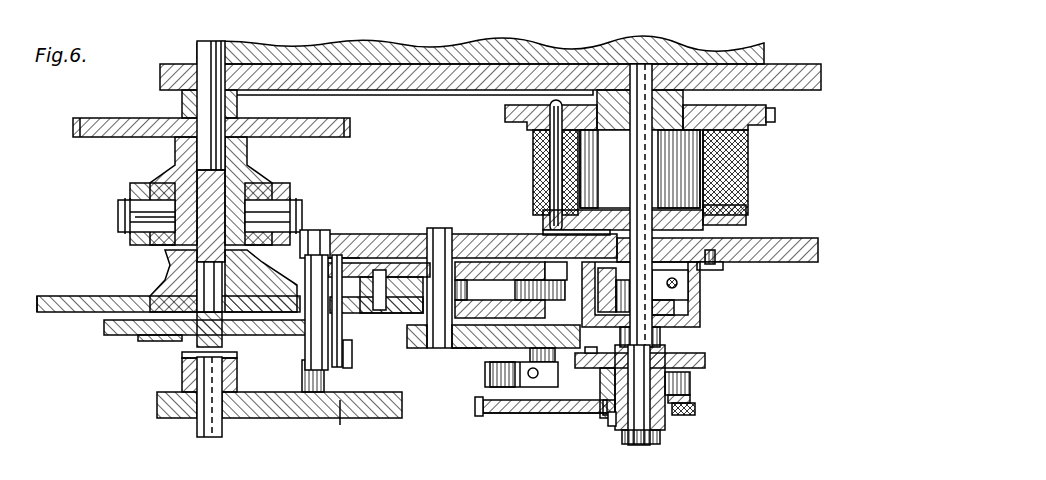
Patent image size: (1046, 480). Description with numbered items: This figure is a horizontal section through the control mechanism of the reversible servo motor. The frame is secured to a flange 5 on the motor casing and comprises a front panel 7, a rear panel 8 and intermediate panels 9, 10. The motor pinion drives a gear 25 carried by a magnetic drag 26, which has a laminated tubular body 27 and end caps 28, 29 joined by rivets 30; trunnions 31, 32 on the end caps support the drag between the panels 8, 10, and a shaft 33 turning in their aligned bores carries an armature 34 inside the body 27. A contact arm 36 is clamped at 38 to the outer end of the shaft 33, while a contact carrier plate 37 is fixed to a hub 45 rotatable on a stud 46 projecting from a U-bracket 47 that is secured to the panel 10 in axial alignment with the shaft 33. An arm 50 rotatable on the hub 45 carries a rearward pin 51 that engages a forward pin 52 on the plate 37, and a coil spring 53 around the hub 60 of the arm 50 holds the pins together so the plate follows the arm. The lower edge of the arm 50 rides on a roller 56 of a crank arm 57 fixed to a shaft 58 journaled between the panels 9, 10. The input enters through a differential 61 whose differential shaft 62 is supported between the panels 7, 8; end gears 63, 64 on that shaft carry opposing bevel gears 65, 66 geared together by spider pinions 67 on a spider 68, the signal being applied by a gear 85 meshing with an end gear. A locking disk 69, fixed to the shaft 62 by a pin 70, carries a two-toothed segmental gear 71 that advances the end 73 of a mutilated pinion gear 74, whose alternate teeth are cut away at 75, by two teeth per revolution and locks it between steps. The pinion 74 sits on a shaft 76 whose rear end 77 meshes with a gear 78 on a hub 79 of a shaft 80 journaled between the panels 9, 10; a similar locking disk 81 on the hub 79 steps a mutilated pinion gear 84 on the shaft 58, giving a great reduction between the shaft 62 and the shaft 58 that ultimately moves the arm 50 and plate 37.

The flange 5 is at (505, 48).
The front panel 7 is at (176, 418).
The rear panel 8 is at (160, 65).
The intermediate panel 9 is at (468, 350).
The intermediate panel 10 is at (807, 238).
The gear 25 is at (505, 112).
The magnetic drag 26 is at (749, 161).
The laminated tubular body 27 is at (748, 178).
The end cap 28 is at (735, 228).
The end cap 29 is at (722, 112).
The rivets 30 is at (533, 153).
The trunnion 31 is at (662, 257).
The trunnion 32 is at (660, 75).
The shaft 33 is at (642, 100).
The armature 34 is at (640, 169).
The contact arm 36 is at (672, 306).
The contact carrier plate 37 is at (706, 362).
The clamp 38 is at (680, 292).
The hub 45 is at (665, 425).
The stud 46 is at (640, 445).
The U-bracket 47 is at (690, 328).
The arm 50 is at (479, 409).
The pin 51 is at (692, 398).
The pin 52 is at (690, 383).
The coil spring 53 is at (695, 410).
The roller 56 is at (518, 413).
The crank arm 57 is at (558, 378).
The shaft 58 is at (530, 230).
The hub 60 is at (614, 426).
The differential 61 is at (118, 205).
The differential shaft 62 is at (225, 105).
The end gear 63 is at (106, 137).
The end gear 64 is at (135, 296).
The end bevel gear 65 is at (176, 166).
The end bevel gear 66 is at (170, 262).
The spider pinions 67 is at (133, 190).
The spider 68 is at (140, 217).
The locking disk 69 is at (106, 335).
The pin 70 is at (182, 358).
The segmental gear 71 is at (312, 405).
The end of mutilated pinion gear 73 is at (345, 365).
The mutilated pinion gear 74 is at (340, 399).
The cut away portions 75 is at (343, 350).
The shaft 76 is at (318, 230).
The rear end of shaft 77 is at (303, 292).
The gear 78 is at (360, 330).
The hub 79 is at (410, 235).
The shaft 80 is at (440, 229).
The locking disk 81 is at (358, 240).
The mutilated pinion gear 84 is at (511, 290).
The gear 85 is at (47, 295).